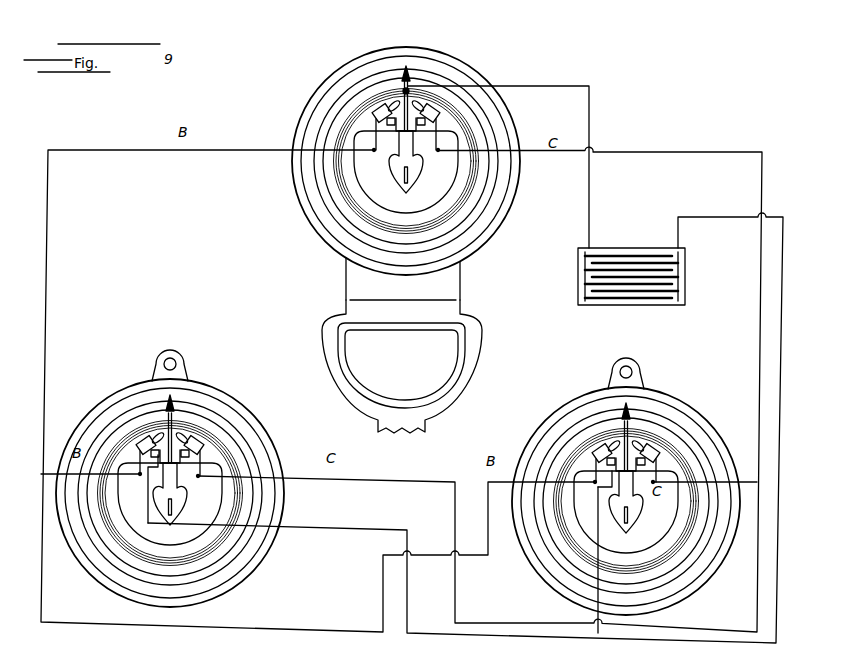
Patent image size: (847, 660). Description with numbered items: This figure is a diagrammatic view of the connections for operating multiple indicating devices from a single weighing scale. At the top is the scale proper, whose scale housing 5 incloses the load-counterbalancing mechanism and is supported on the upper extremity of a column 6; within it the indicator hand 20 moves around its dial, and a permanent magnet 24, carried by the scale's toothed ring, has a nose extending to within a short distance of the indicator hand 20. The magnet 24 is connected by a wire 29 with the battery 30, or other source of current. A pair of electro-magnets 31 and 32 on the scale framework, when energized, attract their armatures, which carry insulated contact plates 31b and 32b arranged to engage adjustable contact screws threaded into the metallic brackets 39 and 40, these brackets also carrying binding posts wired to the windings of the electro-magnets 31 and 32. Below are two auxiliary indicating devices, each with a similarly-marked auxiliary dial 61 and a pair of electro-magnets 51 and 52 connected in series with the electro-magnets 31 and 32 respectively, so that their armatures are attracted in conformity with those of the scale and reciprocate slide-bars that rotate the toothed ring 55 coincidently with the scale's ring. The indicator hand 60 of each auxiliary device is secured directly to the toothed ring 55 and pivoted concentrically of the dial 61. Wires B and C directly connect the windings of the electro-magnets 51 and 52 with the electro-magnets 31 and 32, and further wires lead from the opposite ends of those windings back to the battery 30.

The scale housing 5 is at (296, 186).
The column 6 is at (326, 345).
The indicator hand 20 is at (396, 172).
The permanent magnet 24 is at (410, 84).
The wire 29 is at (498, 159).
The battery 30 is at (620, 276).
The electro-magnet 31 is at (378, 104).
The electro-magnet 32 is at (436, 108).
The contact plate 31b is at (388, 100).
The contact plate 32b is at (424, 103).
The metallic bracket 39 is at (388, 134).
The metallic bracket 40 is at (430, 138).
The electro-magnet 51 is at (148, 432).
The electro-magnet 52 is at (202, 432).
The toothed ring 55 is at (234, 458).
The indicator hand 60 is at (167, 396).
The auxiliary dial 61 is at (212, 402).